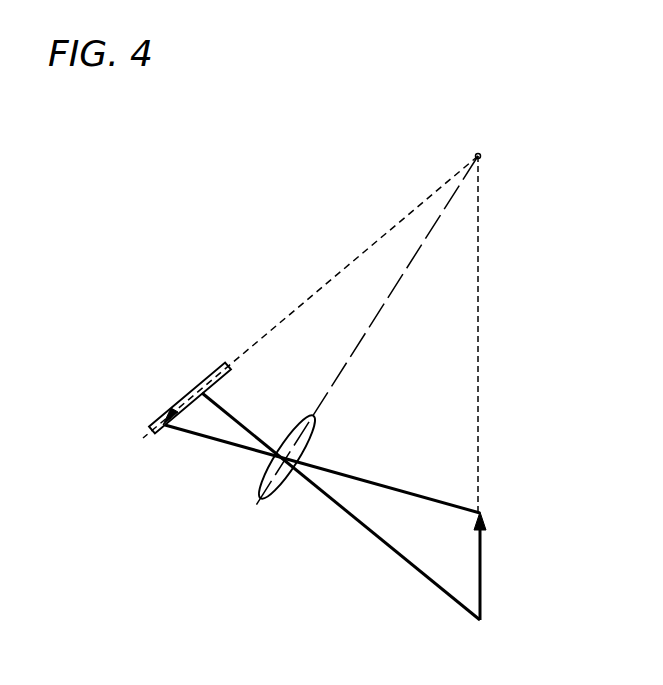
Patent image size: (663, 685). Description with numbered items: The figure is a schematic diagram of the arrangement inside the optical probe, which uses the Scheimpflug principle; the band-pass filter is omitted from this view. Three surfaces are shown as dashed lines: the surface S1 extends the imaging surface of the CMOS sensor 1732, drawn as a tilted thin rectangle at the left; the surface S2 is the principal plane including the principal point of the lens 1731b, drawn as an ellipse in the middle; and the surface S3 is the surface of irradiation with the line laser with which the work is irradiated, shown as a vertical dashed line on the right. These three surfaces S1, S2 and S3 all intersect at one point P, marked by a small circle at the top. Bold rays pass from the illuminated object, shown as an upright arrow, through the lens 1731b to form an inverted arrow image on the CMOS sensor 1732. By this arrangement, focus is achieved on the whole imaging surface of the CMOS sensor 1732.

The intersection point P is at (481, 157).
The surface extending the imaging surface of the CMOS sensor S1 is at (330, 281).
The principal plane of the lens S2 is at (359, 343).
The surface of irradiation with the line laser S3 is at (479, 336).
The CMOS sensor 1732 is at (152, 425).
The lens 1731b is at (258, 497).